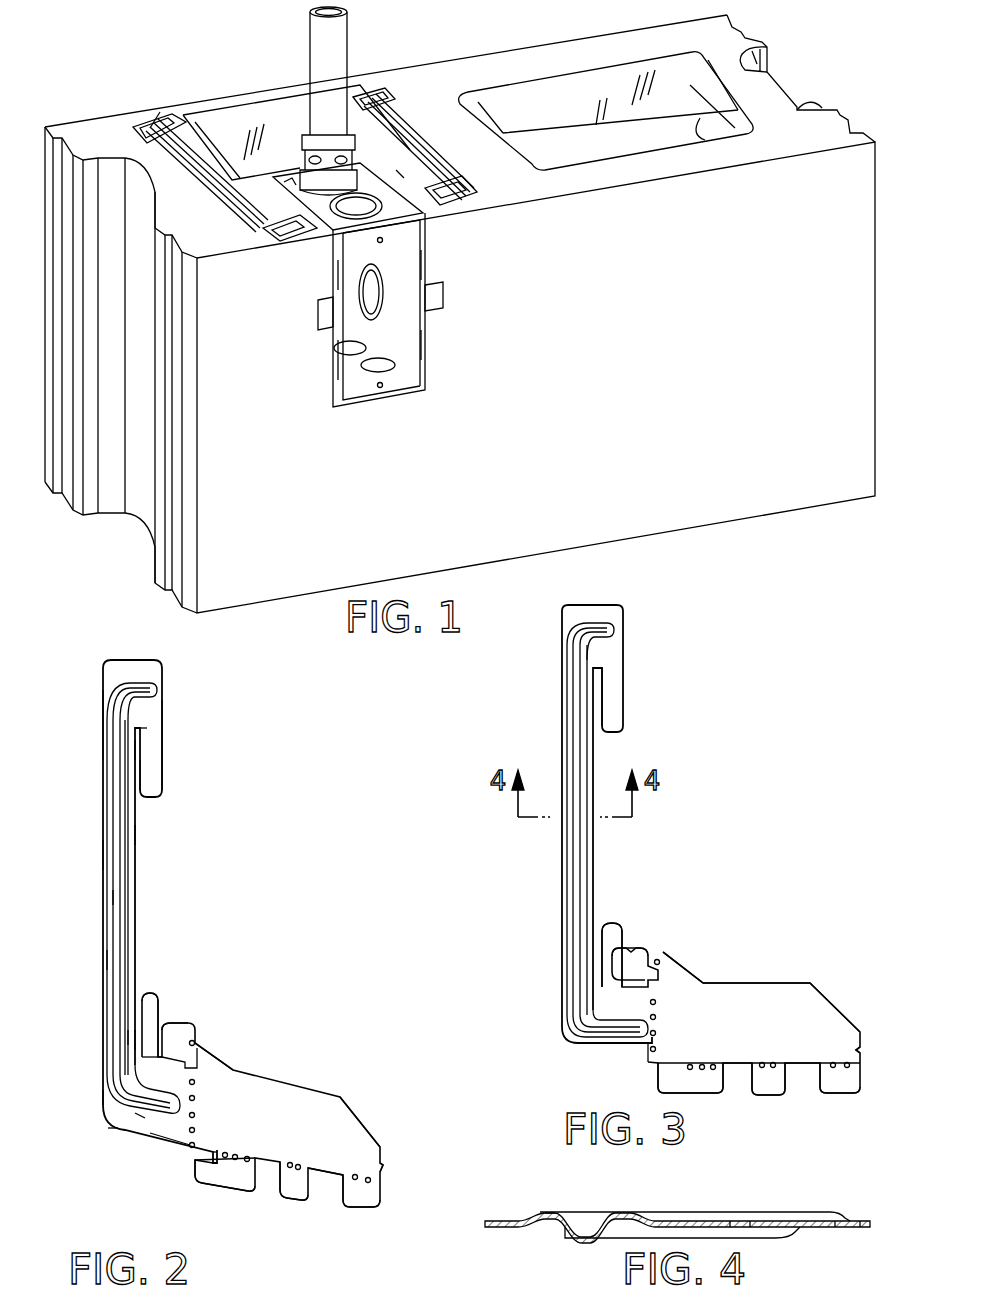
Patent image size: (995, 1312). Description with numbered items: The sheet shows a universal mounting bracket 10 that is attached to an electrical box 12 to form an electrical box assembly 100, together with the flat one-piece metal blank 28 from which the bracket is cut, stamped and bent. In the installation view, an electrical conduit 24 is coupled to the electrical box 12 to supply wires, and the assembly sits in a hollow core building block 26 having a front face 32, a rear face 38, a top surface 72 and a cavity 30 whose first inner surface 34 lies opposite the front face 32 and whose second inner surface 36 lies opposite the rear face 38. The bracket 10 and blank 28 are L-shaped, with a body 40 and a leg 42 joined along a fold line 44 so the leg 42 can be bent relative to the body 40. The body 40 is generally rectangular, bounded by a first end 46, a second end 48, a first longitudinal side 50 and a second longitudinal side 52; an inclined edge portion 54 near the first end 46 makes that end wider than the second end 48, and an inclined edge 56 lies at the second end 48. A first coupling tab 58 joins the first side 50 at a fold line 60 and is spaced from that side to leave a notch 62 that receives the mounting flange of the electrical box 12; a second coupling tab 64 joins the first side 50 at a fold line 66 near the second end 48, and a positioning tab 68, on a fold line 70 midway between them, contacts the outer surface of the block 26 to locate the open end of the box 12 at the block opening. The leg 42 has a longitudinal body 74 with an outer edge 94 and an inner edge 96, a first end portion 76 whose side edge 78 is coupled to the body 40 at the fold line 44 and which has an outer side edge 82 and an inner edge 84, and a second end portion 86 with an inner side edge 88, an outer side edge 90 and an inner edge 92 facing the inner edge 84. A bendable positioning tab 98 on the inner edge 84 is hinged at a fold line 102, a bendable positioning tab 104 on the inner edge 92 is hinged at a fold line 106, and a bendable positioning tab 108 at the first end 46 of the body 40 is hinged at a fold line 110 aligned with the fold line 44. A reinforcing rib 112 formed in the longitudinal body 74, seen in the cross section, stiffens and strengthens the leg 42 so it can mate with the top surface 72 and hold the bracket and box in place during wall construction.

In FIG. 1, the universal mounting bracket 10 is at (243, 230).
In FIG. 1, the electrical box 12 is at (425, 375).
In FIG. 1, the electrical conduit 24 is at (310, 43).
In FIG. 1, the building block 26 is at (762, 40).
In FIG. 2, the blank 28 is at (272, 960).
In FIG. 3, the blank 28 is at (688, 865).
In FIG. 4, the blank 28 is at (523, 1205).
In FIG. 1, the hollow cavity 30 is at (558, 147).
In FIG. 1, the front face 32 is at (770, 468).
In FIG. 1, the first inner surface 34 is at (690, 132).
In FIG. 1, the second inner surface 36 is at (237, 143).
In FIG. 1, the rear face 38 is at (183, 103).
In FIG. 2, the body 40 is at (313, 1097).
In FIG. 3, the body 40 is at (780, 998).
In FIG. 4, the body 40 is at (700, 1225).
In FIG. 2, the leg 42 is at (127, 863).
In FIG. 3, the leg 42 is at (572, 867).
In FIG. 4, the leg 42 is at (487, 1225).
In FIG. 2, the fold line 44 is at (150, 1133).
In FIG. 3, the fold line 44 is at (640, 1043).
In FIG. 2, the first end 46 is at (212, 1145).
In FIG. 3, the first end 46 is at (650, 950).
In FIG. 2, the second end 48 is at (380, 1163).
In FIG. 3, the second end 48 is at (858, 1050).
In FIG. 2, the first longitudinal side 50 is at (325, 1175).
In FIG. 3, the first longitudinal side 50 is at (733, 1067).
In FIG. 2, the second longitudinal side 52 is at (253, 1078).
In FIG. 3, the second longitudinal side 52 is at (760, 983).
In FIG. 3, the inclined edge portion 54 is at (690, 968).
In FIG. 2, the inclined edge 56 is at (367, 1127).
In FIG. 3, the inclined edge 56 is at (835, 1003).
In FIG. 2, the first coupling tab 58 is at (230, 1193).
In FIG. 2, the fold line 60 is at (240, 1162).
In FIG. 2, the notch 62 is at (198, 1157).
In FIG. 3, the notch 62 is at (658, 1072).
In FIG. 2, the second coupling tab 64 is at (370, 1208).
In FIG. 3, the second coupling tab 64 is at (837, 1094).
In FIG. 3, the fold line 66 is at (848, 1068).
In FIG. 1, the positioning tab 68 is at (437, 298).
In FIG. 2, the positioning tab 68 is at (300, 1203).
In FIG. 3, the positioning tab 68 is at (770, 1094).
In FIG. 2, the fold line 70 is at (292, 1169).
In FIG. 3, the fold line 70 is at (762, 1075).
In FIG. 1, the top surface 72 is at (810, 127).
In FIG. 2, the longitudinal body 74 is at (117, 960).
In FIG. 2, the first end portion 76 is at (140, 1117).
In FIG. 2, the side edge 78 is at (102, 1098).
In FIG. 2, the outer side edge 82 is at (120, 1123).
In FIG. 2, the inner edge 84 is at (132, 1038).
In FIG. 2, the second end portion 86 is at (152, 670).
In FIG. 3, the second end portion 86 is at (598, 602).
In FIG. 2, the inner side edge 88 is at (163, 717).
In FIG. 2, the outer side edge 90 is at (102, 682).
In FIG. 2, the inner edge 92 is at (137, 747).
In FIG. 2, the outer edge 94 is at (102, 853).
In FIG. 2, the inner edge 96 is at (135, 835).
In FIG. 2, the bendable positioning tab 98 is at (155, 993).
In FIG. 3, the bendable positioning tab 98 is at (613, 922).
In FIG. 1, the electrical box assembly 100 is at (448, 263).
In FIG. 2, the fold line 102 is at (150, 1040).
In FIG. 2, the bendable positioning tab 104 is at (162, 790).
In FIG. 3, the bendable positioning tab 104 is at (613, 718).
In FIG. 2, the fold line 106 is at (147, 732).
In FIG. 2, the bendable positioning tab 108 is at (187, 1023).
In FIG. 3, the bendable positioning tab 108 is at (632, 948).
In FIG. 2, the fold line 110 is at (195, 1040).
In FIG. 3, the fold line 110 is at (660, 960).
In FIG. 2, the reinforcing rib 112 is at (117, 898).
In FIG. 4, the reinforcing rib 112 is at (620, 1212).